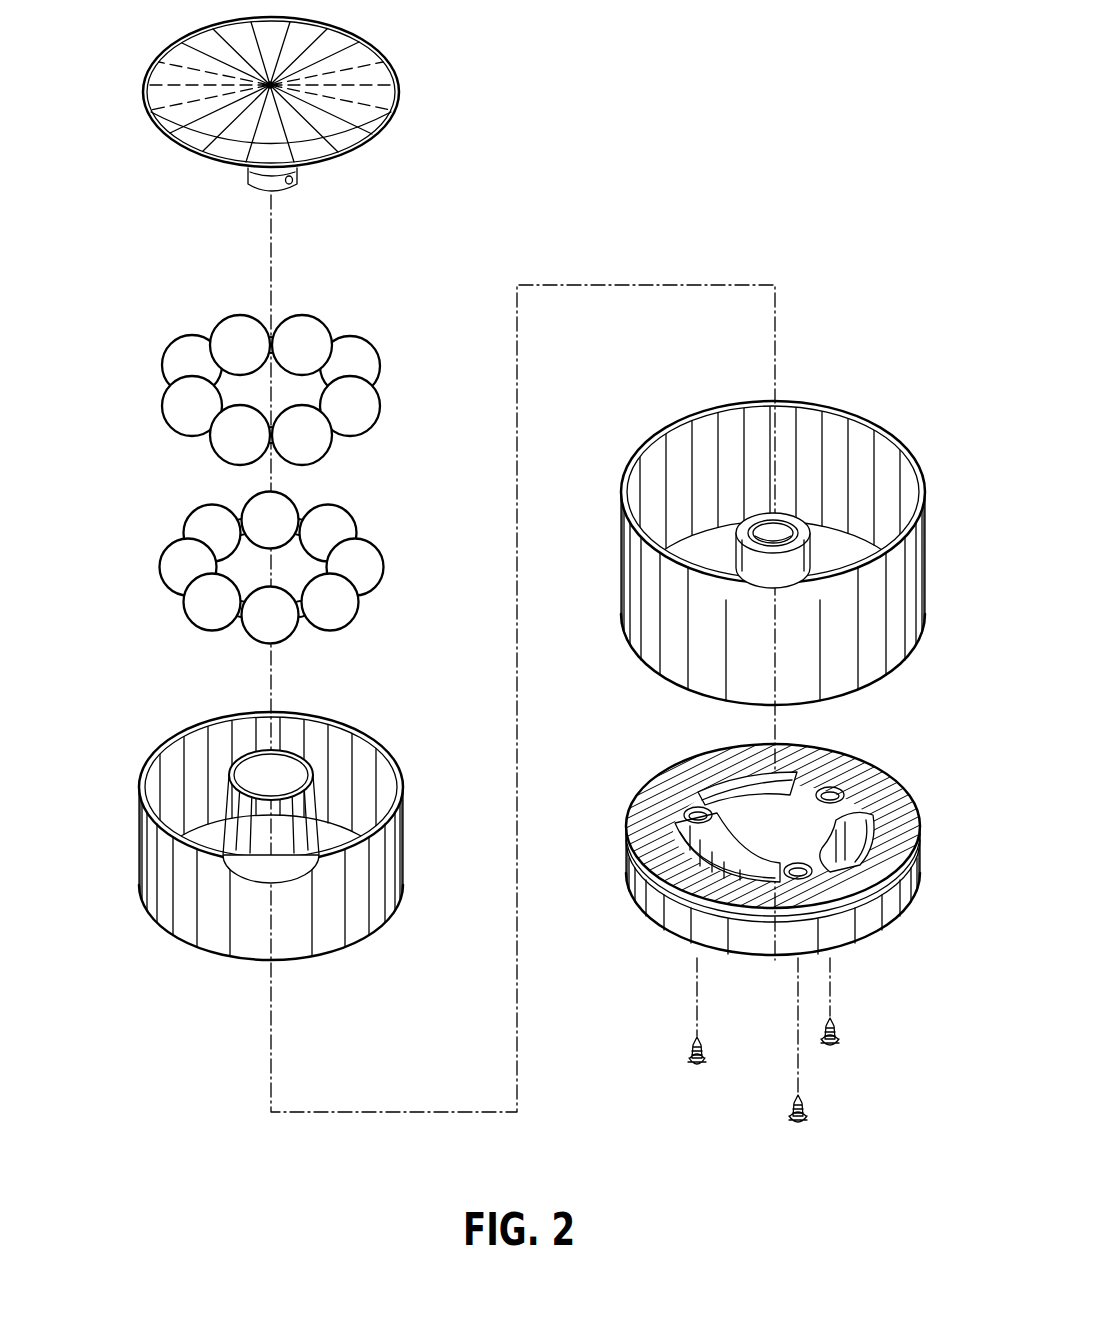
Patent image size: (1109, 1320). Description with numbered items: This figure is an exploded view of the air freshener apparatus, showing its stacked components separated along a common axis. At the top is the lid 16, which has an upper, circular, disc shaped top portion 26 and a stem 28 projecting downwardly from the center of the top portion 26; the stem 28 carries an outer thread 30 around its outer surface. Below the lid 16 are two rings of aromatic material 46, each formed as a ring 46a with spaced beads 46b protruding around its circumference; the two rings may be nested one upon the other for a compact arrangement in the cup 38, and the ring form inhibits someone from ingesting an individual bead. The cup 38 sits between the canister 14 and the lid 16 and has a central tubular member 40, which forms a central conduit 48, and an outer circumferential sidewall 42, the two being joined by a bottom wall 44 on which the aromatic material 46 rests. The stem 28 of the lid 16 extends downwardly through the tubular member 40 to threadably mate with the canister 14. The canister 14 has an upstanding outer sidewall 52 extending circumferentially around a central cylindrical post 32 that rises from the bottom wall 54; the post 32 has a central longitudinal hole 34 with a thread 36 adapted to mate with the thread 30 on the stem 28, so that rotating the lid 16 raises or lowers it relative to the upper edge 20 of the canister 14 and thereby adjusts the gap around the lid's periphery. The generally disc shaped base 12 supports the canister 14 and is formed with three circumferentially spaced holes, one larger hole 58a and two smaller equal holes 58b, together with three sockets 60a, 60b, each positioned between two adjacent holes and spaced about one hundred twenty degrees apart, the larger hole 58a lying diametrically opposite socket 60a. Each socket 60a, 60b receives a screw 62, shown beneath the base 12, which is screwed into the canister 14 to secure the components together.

The base 12 is at (780, 791).
The canister 14 is at (751, 537).
The lid 16 is at (135, 92).
The upper edge 20 is at (896, 446).
The top portion 26 is at (345, 42).
The stem 28 is at (251, 186).
The outer thread 30 is at (287, 185).
The central cylindrical post 32 is at (706, 540).
The central longitudinal hole 34 is at (766, 524).
The thread 36 is at (783, 524).
The cup 38 is at (236, 819).
The central tubular member 40 is at (280, 842).
The outer circumferential sidewall 42 is at (260, 918).
The bottom wall 44 is at (325, 846).
The aromatic material 46 is at (152, 392).
The ring 46a is at (346, 430).
The beads 46b is at (353, 348).
The central conduit 48 is at (254, 763).
The outer sidewall 52 is at (780, 656).
The bottom wall 54 is at (822, 560).
The hole 58a is at (693, 850).
The holes 58b is at (852, 828).
The socket 60a is at (835, 788).
The sockets 60b is at (692, 808).
The screw 62 is at (695, 1068).